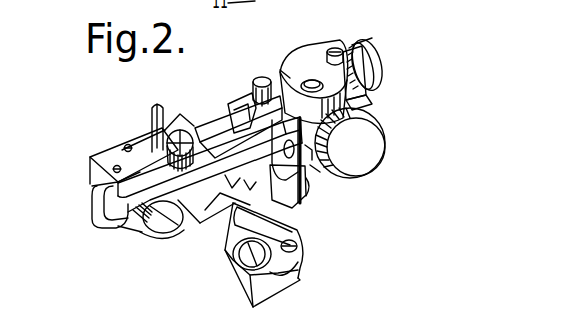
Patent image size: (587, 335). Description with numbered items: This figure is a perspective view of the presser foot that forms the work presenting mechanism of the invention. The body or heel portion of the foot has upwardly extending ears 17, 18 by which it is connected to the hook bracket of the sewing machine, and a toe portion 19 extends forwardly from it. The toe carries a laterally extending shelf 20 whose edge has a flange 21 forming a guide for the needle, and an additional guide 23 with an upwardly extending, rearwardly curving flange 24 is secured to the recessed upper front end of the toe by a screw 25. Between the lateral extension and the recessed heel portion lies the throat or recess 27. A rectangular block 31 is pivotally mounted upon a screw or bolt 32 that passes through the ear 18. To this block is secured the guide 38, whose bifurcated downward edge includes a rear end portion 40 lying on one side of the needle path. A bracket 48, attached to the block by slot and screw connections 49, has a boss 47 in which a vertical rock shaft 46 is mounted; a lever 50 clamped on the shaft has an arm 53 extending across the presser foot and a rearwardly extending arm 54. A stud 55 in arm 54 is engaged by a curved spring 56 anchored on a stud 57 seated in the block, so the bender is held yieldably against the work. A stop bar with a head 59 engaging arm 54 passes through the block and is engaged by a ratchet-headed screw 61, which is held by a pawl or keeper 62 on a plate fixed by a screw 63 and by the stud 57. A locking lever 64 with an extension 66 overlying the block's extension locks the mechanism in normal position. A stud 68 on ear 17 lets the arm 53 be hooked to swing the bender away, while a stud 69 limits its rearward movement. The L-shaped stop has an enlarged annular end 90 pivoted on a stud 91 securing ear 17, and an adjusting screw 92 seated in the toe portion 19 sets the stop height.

The ear 17 is at (117, 148).
The ear 18 is at (330, 48).
The toe portion 19 is at (226, 203).
The shelf 20 is at (296, 206).
The flange 21 is at (268, 222).
The additional guide 23 is at (300, 264).
The flange 24 is at (300, 246).
The screw 25 is at (245, 262).
The throat or recess 27 is at (172, 244).
The rectangular block 31 is at (362, 98).
The screw or bolt 32 is at (372, 123).
The guide 38 is at (238, 212).
The end portion 40 is at (180, 235).
The rock shaft 46 is at (290, 100).
The boss 47 is at (315, 172).
The bracket 48 is at (325, 165).
The slot and screw connections 49 is at (352, 160).
The lever 50 is at (198, 125).
The arm 53 is at (107, 205).
The arm 54 is at (220, 110).
The stud 55 is at (256, 78).
The spring 56 is at (286, 66).
The stud 57 is at (338, 45).
The head 59 is at (230, 112).
The screw 61 is at (362, 96).
The pawl or keeper 62 is at (360, 35).
The screw 63 is at (373, 67).
The locking lever 64 is at (185, 118).
The extension 66 is at (236, 124).
The stud 68 is at (97, 150).
The stud 69 is at (117, 165).
The annular end 90 is at (112, 178).
The stud 91 is at (140, 236).
The adjusting screw 92 is at (128, 144).